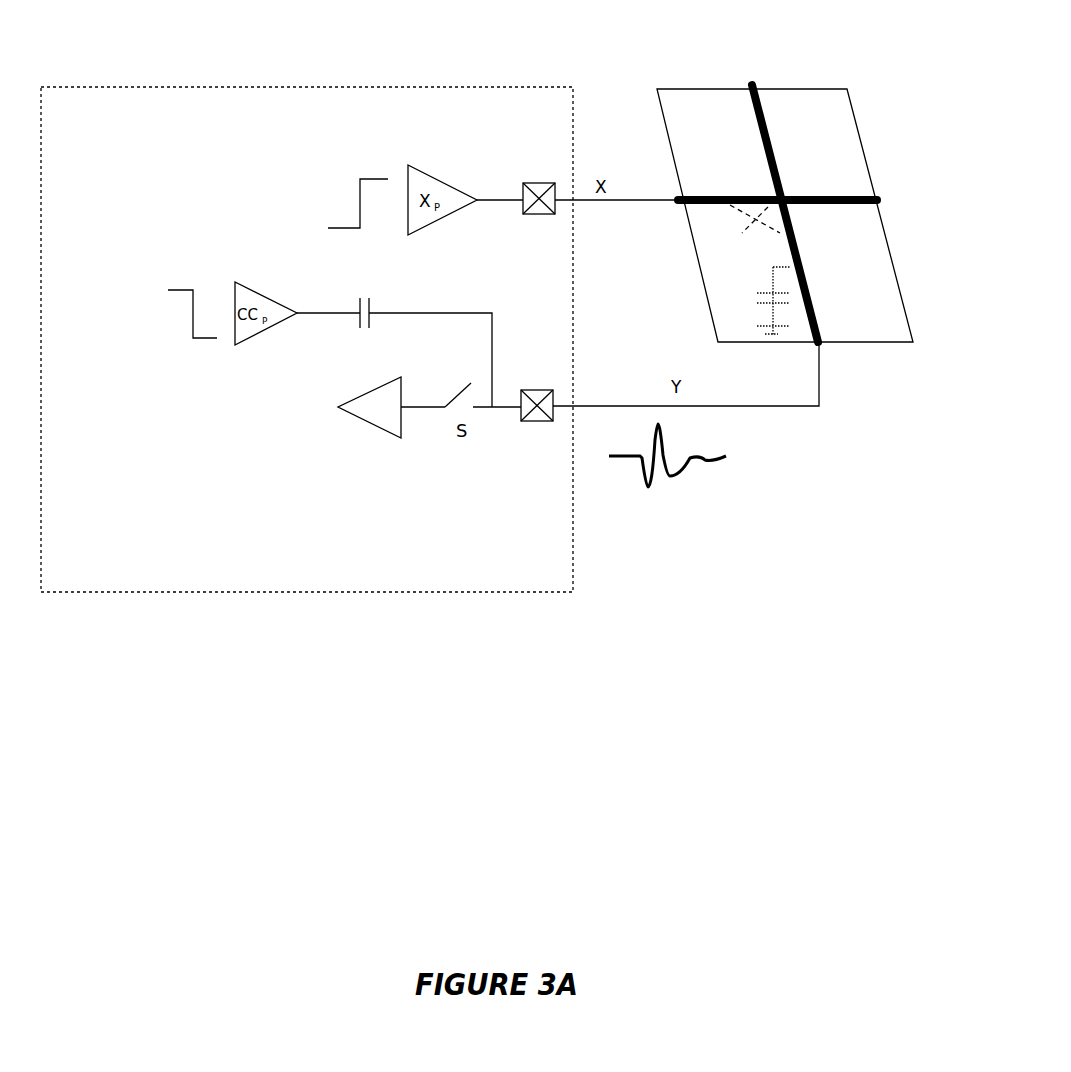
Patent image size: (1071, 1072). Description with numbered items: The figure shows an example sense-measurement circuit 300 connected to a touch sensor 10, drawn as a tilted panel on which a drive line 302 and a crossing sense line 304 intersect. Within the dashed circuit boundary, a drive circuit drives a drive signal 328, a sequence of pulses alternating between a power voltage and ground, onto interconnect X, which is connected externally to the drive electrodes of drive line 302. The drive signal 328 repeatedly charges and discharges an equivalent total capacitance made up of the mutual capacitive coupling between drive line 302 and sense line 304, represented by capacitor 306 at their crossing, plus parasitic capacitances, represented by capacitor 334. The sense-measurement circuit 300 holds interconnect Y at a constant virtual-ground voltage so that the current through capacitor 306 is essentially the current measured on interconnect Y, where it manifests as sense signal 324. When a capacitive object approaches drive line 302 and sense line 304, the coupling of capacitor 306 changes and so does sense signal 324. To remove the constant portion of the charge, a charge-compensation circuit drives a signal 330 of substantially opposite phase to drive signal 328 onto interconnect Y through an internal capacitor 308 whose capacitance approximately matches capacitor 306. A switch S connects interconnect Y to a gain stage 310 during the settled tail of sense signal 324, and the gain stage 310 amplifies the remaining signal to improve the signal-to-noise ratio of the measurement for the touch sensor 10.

The touch sensor 10 is at (799, 93).
The sense-measurement circuit 300 is at (290, 143).
The drive line 302 is at (824, 189).
The sense line 304 is at (821, 318).
The capacitor 306 is at (754, 234).
The internal capacitor 308 is at (362, 301).
The gain stage 310 is at (368, 414).
The sense signal 324 is at (723, 468).
The drive signal 328 is at (341, 222).
The signal 330 is at (178, 286).
The capacitor 334 is at (754, 301).